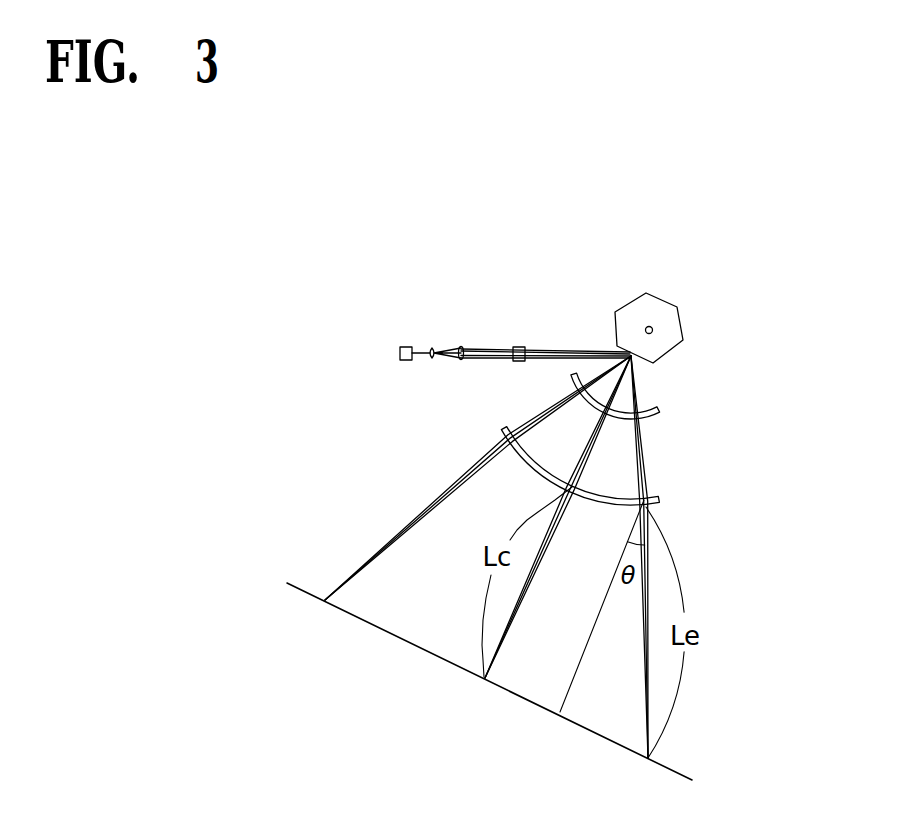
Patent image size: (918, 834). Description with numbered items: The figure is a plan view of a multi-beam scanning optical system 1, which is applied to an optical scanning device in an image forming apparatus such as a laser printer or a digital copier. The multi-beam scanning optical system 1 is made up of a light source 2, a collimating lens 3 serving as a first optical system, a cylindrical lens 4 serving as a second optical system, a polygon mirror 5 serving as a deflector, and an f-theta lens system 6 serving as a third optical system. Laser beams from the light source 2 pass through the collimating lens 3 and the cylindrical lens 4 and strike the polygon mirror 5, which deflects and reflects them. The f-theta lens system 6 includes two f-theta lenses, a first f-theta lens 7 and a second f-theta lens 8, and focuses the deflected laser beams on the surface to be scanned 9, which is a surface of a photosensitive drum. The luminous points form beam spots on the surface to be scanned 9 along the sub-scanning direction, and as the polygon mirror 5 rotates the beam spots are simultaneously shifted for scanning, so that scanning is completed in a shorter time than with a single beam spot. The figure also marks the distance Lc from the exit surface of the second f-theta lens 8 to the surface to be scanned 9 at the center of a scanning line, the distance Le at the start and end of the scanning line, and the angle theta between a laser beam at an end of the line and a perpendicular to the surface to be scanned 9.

The multi-beam scanning optical system 1 is at (687, 238).
The light source 2 is at (405, 347).
The collimating lens 3 is at (461, 347).
The cylindrical lens 4 is at (519, 347).
The polygon mirror 5 is at (679, 314).
The fθ lens system 6 is at (743, 357).
The first fθ lens 7 is at (660, 412).
The second fθ lens 8 is at (661, 503).
The surface to be scanned 9 is at (668, 767).